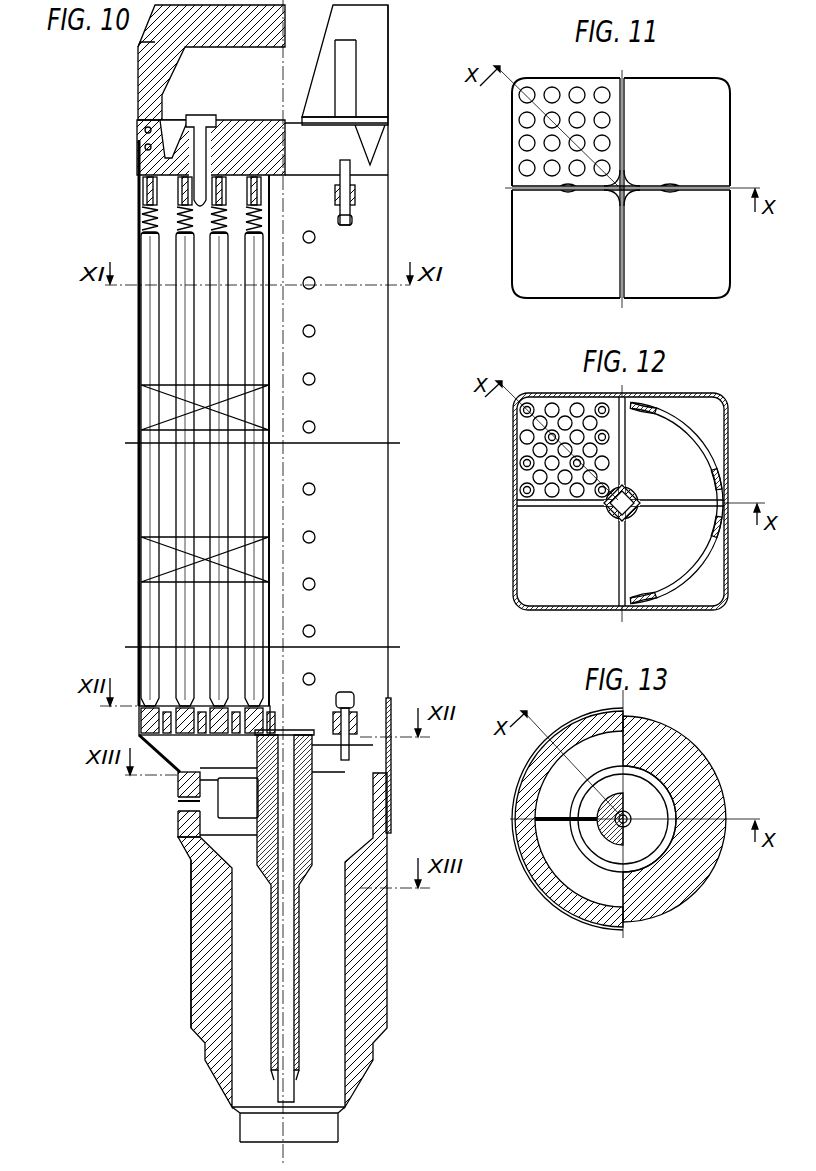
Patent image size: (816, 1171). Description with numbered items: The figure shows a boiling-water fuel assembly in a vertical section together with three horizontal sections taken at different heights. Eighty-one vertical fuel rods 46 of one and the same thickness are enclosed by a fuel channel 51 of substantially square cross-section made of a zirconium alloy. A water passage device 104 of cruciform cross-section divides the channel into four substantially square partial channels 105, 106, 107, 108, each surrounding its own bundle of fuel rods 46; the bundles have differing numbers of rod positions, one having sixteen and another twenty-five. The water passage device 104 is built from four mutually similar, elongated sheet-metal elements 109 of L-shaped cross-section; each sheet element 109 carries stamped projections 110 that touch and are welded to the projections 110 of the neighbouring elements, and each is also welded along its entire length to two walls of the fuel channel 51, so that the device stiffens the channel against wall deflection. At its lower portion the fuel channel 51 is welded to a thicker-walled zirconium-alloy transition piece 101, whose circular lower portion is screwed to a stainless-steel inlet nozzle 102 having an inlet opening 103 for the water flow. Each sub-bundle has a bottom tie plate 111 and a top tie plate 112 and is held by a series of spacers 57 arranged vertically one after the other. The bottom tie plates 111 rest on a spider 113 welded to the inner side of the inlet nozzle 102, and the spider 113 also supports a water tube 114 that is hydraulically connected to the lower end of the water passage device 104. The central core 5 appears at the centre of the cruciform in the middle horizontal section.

In FIG. 12, the central core 5 is at (655, 505).
In FIG. 10, the fuel rods 46 is at (150, 330).
In FIG. 11, the fuel rods 46 is at (525, 145).
In FIG. 10, the fuel channel 51 is at (139, 388).
In FIG. 10, the spacers 57 is at (170, 418).
In FIG. 10, the transition piece 101 is at (164, 768).
In FIG. 13, the transition piece 101 is at (543, 889).
In FIG. 10, the inlet nozzle 102 is at (381, 945).
In FIG. 10, the inlet opening 103 is at (252, 1132).
In FIG. 10, the water passage device 104 is at (270, 362).
In FIG. 11, the water passage device 104 is at (690, 192).
In FIG. 12, the water passage device 104 is at (618, 552).
In FIG. 11, the partial channel 105 is at (705, 265).
In FIG. 11, the partial channel 106 is at (706, 140).
In FIG. 11, the partial channel 107 is at (565, 85).
In FIG. 11, the partial channel 108 is at (540, 250).
In FIG. 11, the sheet-metal elements 109 is at (700, 192).
In FIG. 12, the sheet-metal elements 109 is at (615, 575).
In FIG. 10, the stamped projections 110 is at (315, 584).
In FIG. 11, the stamped projections 110 is at (588, 196).
In FIG. 10, the bottom tie plate 111 is at (175, 727).
In FIG. 12, the bottom tie plate 111 is at (525, 475).
In FIG. 10, the top tie plate 112 is at (148, 190).
In FIG. 10, the spider 113 is at (212, 845).
In FIG. 10, the water tube 114 is at (300, 1000).